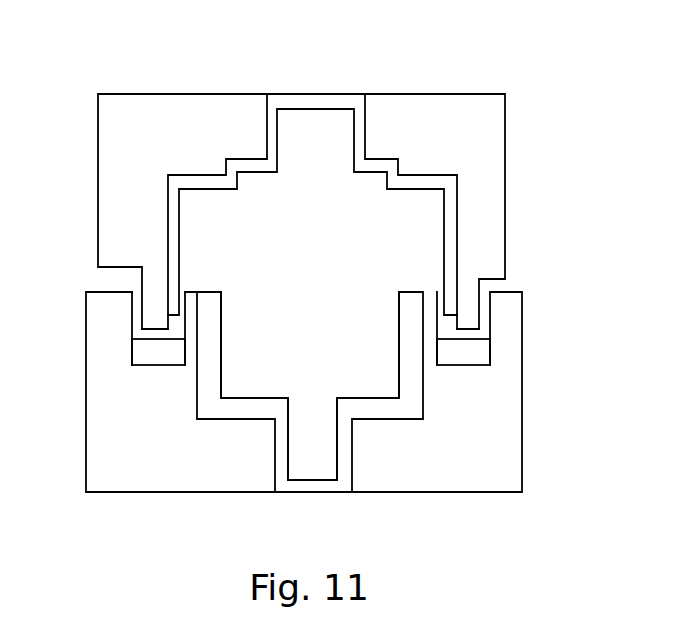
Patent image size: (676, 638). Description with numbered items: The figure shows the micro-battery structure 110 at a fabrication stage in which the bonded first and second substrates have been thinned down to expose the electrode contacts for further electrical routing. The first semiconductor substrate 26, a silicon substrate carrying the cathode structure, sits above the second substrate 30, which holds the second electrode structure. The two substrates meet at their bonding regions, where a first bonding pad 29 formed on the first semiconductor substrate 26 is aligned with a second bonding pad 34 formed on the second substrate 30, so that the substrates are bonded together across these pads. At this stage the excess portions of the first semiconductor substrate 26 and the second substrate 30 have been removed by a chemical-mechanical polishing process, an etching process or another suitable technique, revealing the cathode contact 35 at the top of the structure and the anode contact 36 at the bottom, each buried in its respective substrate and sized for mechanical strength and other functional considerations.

The micro-battery structure 110 is at (593, 87).
The first semiconductor substrate 26 is at (497, 161).
The second substrate 30 is at (512, 446).
The cathode contact 35 is at (316, 94).
The anode contact 36 is at (333, 493).
The first bonding pad 29 is at (152, 333).
The second bonding pad 34 is at (140, 350).